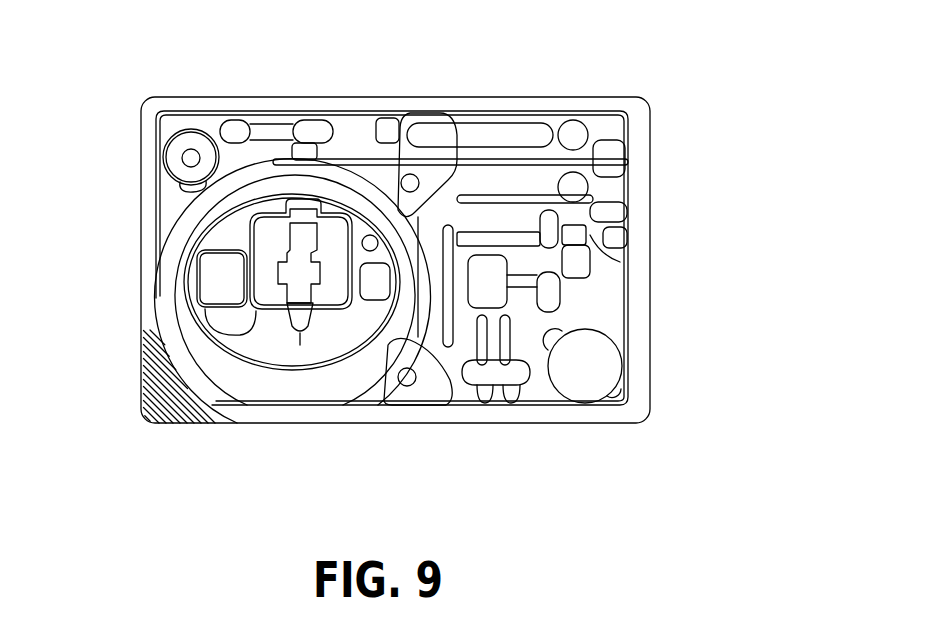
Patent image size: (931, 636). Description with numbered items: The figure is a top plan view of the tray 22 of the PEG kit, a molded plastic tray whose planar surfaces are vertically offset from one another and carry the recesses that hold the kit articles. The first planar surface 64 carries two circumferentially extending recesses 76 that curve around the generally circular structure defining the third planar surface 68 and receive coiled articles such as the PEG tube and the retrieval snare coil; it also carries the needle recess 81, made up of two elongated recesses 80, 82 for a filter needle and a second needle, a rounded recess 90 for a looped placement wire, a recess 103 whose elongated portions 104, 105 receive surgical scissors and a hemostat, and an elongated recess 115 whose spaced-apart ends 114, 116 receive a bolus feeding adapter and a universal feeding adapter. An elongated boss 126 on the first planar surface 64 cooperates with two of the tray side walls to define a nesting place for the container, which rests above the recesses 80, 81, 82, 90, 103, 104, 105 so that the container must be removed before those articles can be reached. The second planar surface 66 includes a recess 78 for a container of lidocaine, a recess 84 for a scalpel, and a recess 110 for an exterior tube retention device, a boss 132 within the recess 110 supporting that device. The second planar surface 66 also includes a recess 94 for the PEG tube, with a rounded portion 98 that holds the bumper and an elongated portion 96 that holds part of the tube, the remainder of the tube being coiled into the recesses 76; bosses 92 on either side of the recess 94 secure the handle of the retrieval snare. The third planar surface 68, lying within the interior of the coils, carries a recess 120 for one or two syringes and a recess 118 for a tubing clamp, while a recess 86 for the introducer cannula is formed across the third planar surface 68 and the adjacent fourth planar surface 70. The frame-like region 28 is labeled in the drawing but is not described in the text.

The tray 22 is at (645, 107).
The frame 28 is at (155, 245).
The first planar surface 64 is at (180, 322).
The second planar surface 66 is at (627, 176).
The third planar surface 68 is at (330, 205).
The fourth planar surface 70 is at (272, 205).
The recesses 76 is at (200, 208).
The recess 78 is at (145, 357).
The elongated recess 80 is at (478, 365).
The needle recess 81 is at (495, 382).
The elongated recess 82 is at (520, 385).
The recess 84 is at (200, 122).
The recess 86 is at (293, 240).
The recess 90 is at (603, 360).
The bosses 92 is at (578, 133).
The recess 94 is at (622, 145).
The elongated portion 96 is at (533, 160).
The rounded portion 98 is at (612, 160).
The recess 103 is at (612, 265).
The elongated portion 104 is at (622, 213).
The elongated portion 105 is at (603, 277).
The recess 110 is at (180, 140).
The end 114 is at (400, 125).
The recess 115 is at (492, 160).
The end 116 is at (428, 330).
The recess 118 is at (197, 281).
The recess 120 is at (233, 330).
The elongated boss 126 is at (447, 352).
The boss 132 is at (182, 157).